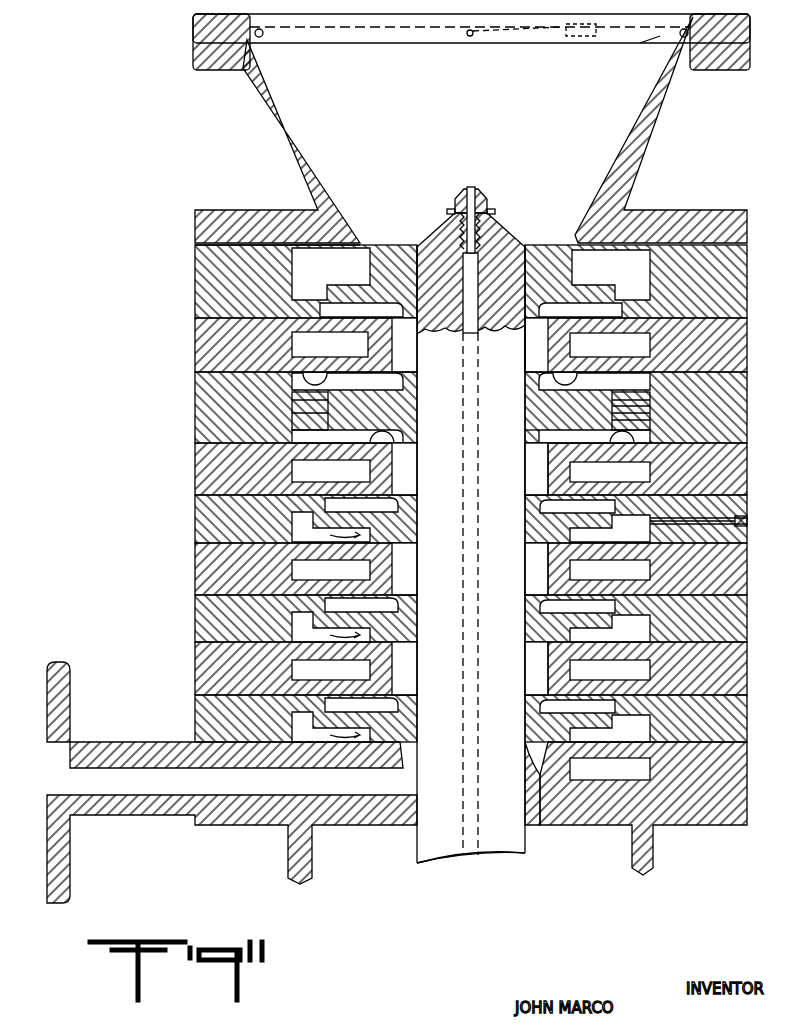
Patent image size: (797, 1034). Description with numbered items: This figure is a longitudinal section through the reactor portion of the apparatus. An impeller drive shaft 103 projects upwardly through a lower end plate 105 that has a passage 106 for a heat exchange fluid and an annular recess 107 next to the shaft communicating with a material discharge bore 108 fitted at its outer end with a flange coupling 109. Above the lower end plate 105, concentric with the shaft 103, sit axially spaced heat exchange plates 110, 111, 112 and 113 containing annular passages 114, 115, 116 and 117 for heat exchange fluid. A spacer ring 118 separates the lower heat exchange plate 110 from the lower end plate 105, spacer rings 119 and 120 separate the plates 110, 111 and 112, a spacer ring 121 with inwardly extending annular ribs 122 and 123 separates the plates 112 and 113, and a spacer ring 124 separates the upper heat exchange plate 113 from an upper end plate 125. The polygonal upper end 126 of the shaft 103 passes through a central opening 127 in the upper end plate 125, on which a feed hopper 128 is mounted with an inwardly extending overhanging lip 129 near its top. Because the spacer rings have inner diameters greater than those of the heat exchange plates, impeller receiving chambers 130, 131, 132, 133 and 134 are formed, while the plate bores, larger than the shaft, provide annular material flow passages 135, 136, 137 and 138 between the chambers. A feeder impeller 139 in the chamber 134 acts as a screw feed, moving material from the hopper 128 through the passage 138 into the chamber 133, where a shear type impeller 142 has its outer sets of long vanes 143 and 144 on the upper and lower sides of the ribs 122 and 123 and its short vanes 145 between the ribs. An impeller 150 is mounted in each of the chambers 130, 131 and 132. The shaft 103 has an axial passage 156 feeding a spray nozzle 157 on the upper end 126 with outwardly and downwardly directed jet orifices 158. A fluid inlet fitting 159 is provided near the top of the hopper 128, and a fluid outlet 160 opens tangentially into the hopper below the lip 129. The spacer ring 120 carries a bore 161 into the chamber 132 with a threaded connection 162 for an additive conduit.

The impeller drive shaft 103 is at (528, 852).
The lower end plate 105 is at (735, 827).
The passage 106 is at (610, 769).
The annular recess 107 is at (540, 826).
The material discharge bore 108 is at (162, 795).
The flange coupling 109 is at (68, 664).
The heat exchange plate 110 is at (748, 667).
The heat exchange plate 111 is at (748, 572).
The heat exchange plate 112 is at (748, 470).
The upper heat exchange plate 113 is at (748, 330).
The annular passage 114 is at (610, 670).
The annular passage 115 is at (588, 568).
The annular passage 116 is at (580, 472).
The annular passage 117 is at (610, 345).
The spacer ring 118 is at (748, 720).
The spacer ring 119 is at (748, 615).
The spacer ring 120 is at (748, 497).
The spacer ring 121 is at (748, 400).
The annular rib 122 is at (650, 420).
The annular rib 123 is at (650, 380).
The spacer ring 124 is at (748, 278).
The upper end plate 125 is at (746, 210).
The upper end of shaft 126 is at (505, 232).
The central opening 127 is at (360, 237).
The feed hopper 128 is at (662, 120).
The overhanging lip 129 is at (657, 54).
The impeller receiving chamber 130 is at (610, 728).
The impeller receiving chamber 131 is at (610, 628).
The impeller receiving chamber 132 is at (580, 535).
The impeller receiving chamber 133 is at (537, 433).
The impeller receiving chamber 134 is at (611, 275).
The annular material flow passage 135 is at (530, 669).
The annular material flow passage 136 is at (530, 557).
The annular material flow passage 137 is at (530, 466).
The annular material flow passage 138 is at (530, 343).
The feeder impeller 139 is at (361, 276).
The shear type impeller 142 is at (355, 435).
The long vanes 143 is at (629, 401).
The long vanes 144 is at (622, 437).
The short vanes 145 is at (650, 408).
The impeller 150 is at (330, 529).
The axial passage 156 is at (463, 770).
The spray nozzle 157 is at (475, 190).
The jet orifices 158 is at (488, 203).
The fluid inlet fitting 159 is at (583, 37).
The fluid outlet 160 is at (470, 37).
The bore 161 is at (716, 536).
The threaded connection 162 is at (716, 516).